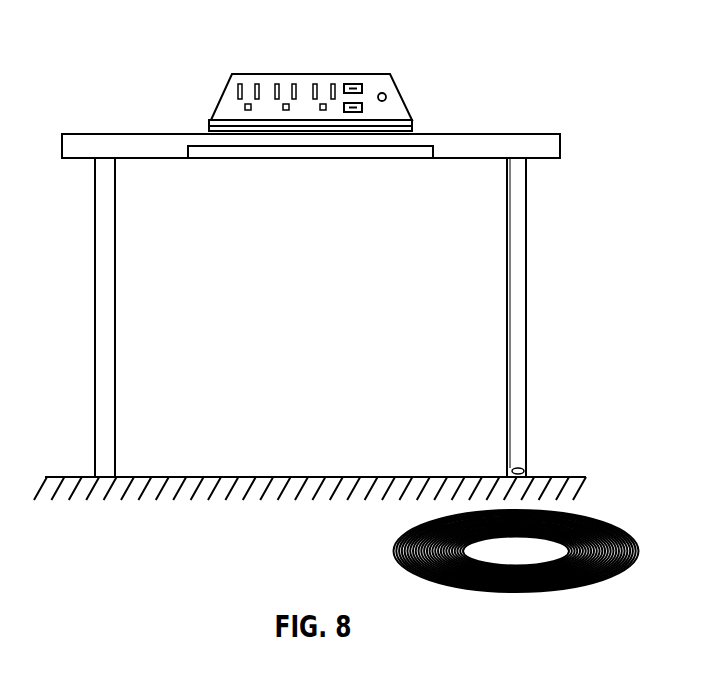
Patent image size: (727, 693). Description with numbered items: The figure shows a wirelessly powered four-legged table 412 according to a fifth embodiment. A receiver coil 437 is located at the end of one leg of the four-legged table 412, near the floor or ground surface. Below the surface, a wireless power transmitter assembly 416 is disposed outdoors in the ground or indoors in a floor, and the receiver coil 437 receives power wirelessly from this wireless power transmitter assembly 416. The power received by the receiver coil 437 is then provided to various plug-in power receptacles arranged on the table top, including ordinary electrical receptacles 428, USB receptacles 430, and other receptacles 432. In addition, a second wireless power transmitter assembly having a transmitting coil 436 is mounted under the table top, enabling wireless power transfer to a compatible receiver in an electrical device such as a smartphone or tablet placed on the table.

The four-legged table 412 is at (523, 134).
The wireless power transmitter assembly 416 is at (407, 538).
The ordinary electrical receptacles 428 is at (278, 83).
The USB receptacles 430 is at (353, 82).
The other receptacles 432 is at (384, 93).
The transmitting coil 436 is at (322, 158).
The receiver coil 437 is at (527, 471).